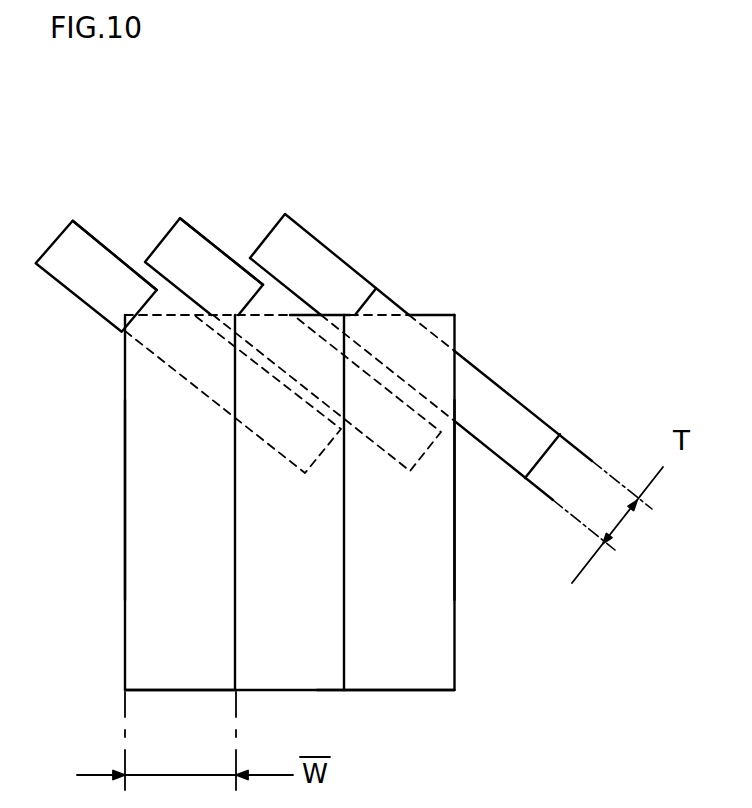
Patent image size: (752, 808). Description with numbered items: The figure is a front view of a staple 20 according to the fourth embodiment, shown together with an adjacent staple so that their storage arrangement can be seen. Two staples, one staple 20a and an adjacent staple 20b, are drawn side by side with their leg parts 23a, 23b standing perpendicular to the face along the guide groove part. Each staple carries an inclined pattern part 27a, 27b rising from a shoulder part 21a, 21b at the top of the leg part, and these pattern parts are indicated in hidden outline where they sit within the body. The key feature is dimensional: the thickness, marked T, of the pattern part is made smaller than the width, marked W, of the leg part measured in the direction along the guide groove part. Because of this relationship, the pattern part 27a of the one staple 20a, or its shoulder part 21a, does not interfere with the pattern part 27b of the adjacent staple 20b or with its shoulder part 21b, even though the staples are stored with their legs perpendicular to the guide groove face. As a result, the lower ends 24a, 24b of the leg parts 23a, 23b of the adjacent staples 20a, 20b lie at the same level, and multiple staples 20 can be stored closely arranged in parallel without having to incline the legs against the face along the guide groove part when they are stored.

The staple 20 is at (470, 282).
The one staple 20a is at (52, 195).
The adjacent staple 20b is at (176, 202).
The shoulder part 21a is at (170, 347).
The shoulder part 21b is at (303, 342).
The leg part 23a is at (147, 577).
The leg part 23b is at (325, 595).
The lower end 24a is at (163, 690).
The lower end 24b is at (317, 689).
The pattern part 27a is at (107, 262).
The pattern part 27b is at (207, 258).